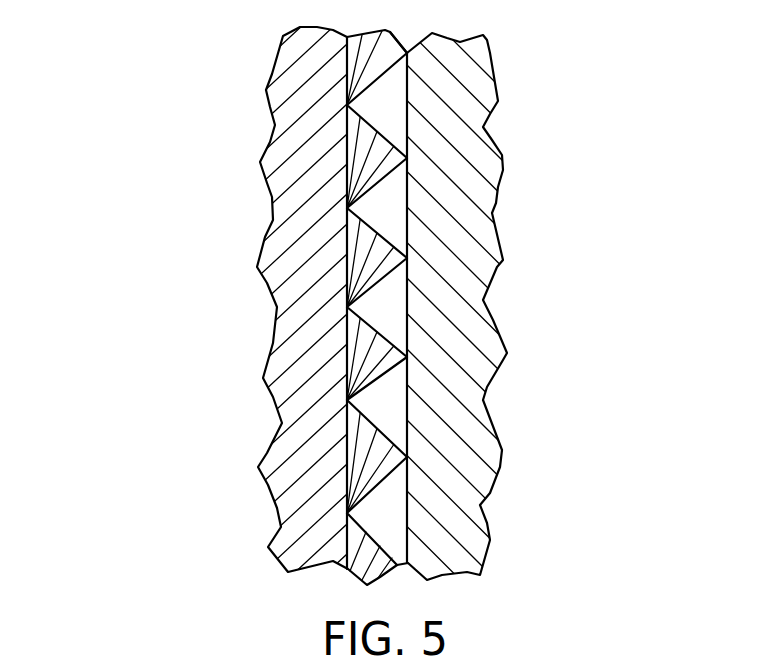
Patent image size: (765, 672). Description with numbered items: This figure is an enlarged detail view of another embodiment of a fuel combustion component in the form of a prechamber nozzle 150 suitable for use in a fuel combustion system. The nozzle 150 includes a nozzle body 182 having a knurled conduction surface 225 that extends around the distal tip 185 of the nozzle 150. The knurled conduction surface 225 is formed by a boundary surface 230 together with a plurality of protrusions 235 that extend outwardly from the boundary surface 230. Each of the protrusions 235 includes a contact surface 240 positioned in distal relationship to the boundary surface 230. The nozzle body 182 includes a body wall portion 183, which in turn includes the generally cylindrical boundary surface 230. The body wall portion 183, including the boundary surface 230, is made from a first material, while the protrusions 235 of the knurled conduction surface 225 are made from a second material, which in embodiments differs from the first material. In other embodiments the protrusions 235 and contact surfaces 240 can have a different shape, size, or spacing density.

The nozzle 150 is at (297, 80).
The nozzle body 182 is at (283, 155).
The body wall portion 183 is at (280, 249).
The distal tip 185 is at (300, 375).
The knurled conduction surface 225 is at (380, 192).
The boundary surface 230 is at (367, 362).
The protrusions 235 is at (404, 88).
The contact surface 240 is at (285, 113).